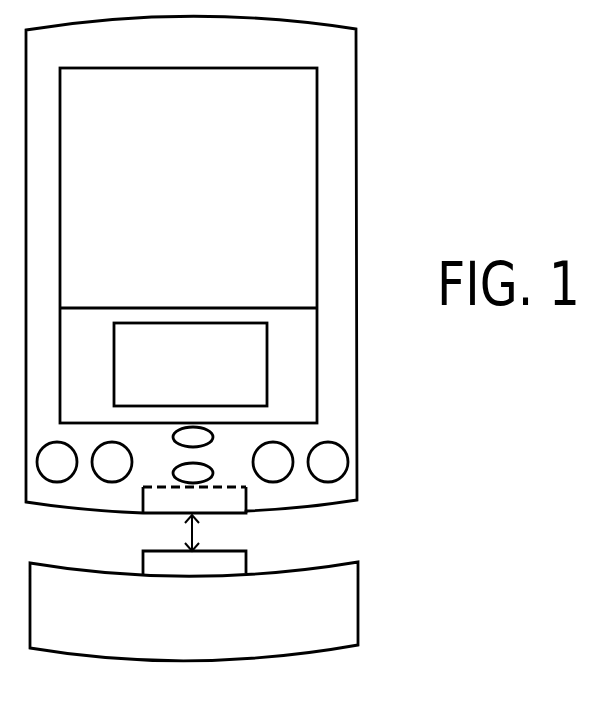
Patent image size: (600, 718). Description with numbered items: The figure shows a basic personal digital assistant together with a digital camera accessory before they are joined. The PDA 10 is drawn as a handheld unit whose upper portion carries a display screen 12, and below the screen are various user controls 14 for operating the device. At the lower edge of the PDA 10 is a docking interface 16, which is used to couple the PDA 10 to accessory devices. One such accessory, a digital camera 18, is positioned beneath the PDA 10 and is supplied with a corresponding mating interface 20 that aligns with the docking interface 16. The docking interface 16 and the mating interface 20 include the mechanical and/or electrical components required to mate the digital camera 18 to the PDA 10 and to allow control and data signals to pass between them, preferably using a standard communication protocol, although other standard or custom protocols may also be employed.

The PDA 10 is at (371, 95).
The display screen 12 is at (196, 204).
The user controls 14 is at (334, 430).
The docking interface 16 is at (255, 517).
The digital camera 18 is at (197, 632).
The mating interface 20 is at (130, 546).